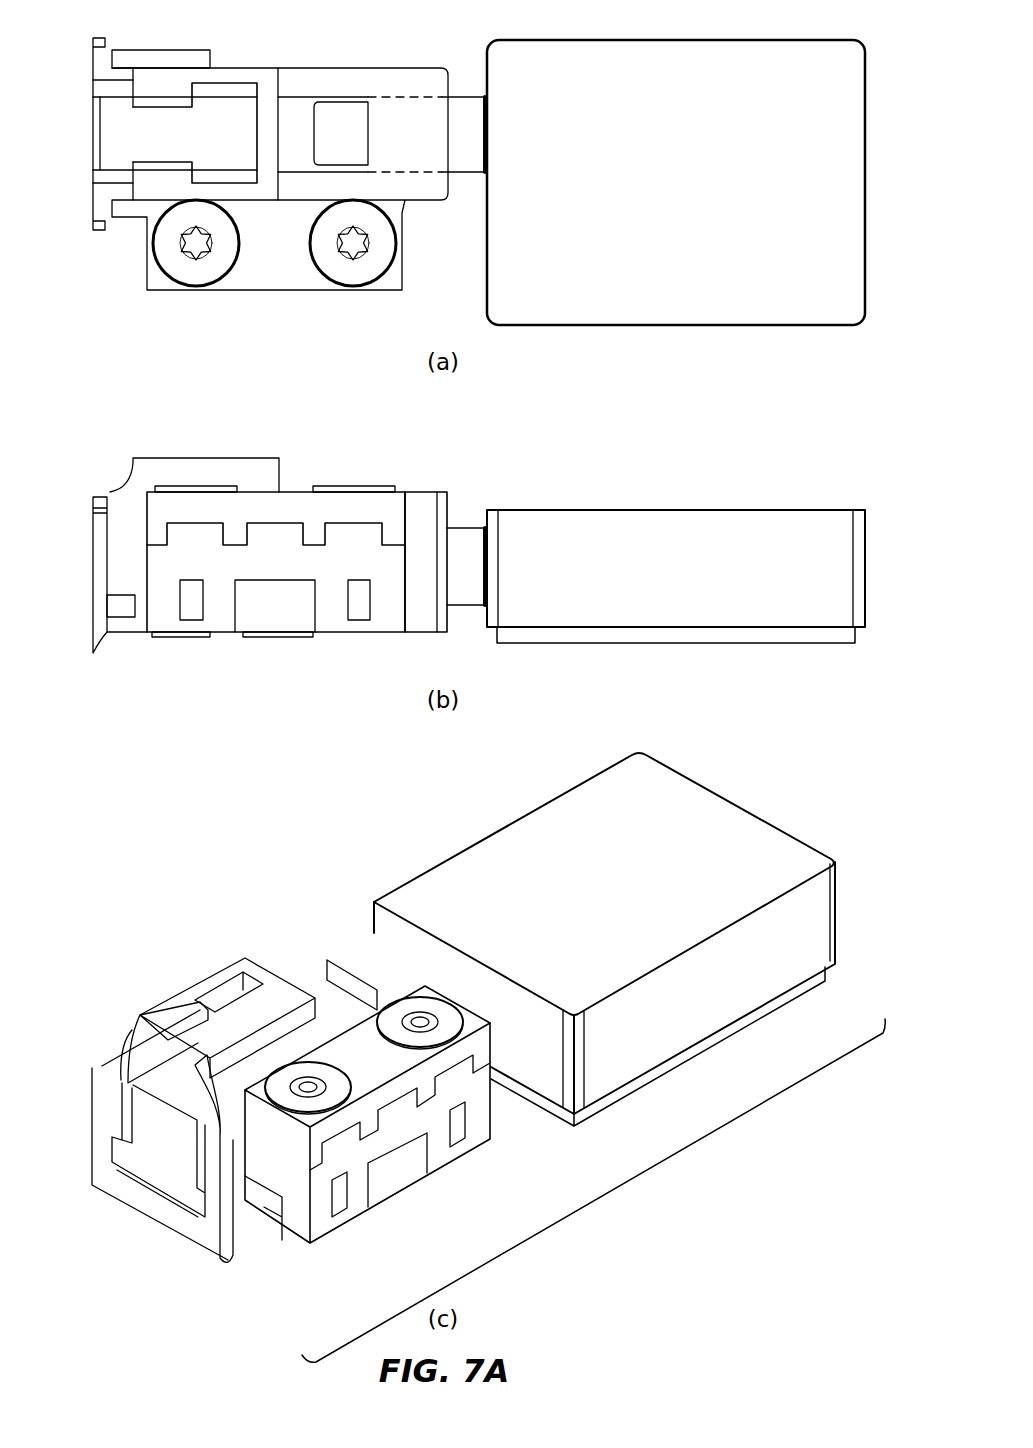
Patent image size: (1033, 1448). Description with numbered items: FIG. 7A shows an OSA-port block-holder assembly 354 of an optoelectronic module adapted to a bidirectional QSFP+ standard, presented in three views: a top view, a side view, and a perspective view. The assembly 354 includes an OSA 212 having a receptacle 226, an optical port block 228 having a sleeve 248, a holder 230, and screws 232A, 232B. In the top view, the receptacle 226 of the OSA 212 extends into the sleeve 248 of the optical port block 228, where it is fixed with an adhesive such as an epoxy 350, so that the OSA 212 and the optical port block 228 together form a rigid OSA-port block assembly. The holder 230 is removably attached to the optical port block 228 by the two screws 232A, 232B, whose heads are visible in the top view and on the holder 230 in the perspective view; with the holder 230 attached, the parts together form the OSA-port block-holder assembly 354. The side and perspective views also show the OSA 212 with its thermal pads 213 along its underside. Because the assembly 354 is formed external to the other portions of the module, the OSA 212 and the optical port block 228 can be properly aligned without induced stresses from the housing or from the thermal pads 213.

The optical port block 228 is at (175, 50).
The sleeve 248 is at (310, 97).
The receptacle 226 is at (463, 117).
The OSA 212 is at (543, 40).
The thermal pads 213 is at (618, 633).
The holder 230 is at (330, 612).
The screw 232A is at (197, 268).
The screw 232B is at (353, 268).
The epoxy 350 is at (421, 172).
The OSA-port block-holder assembly 354 is at (596, 1193).